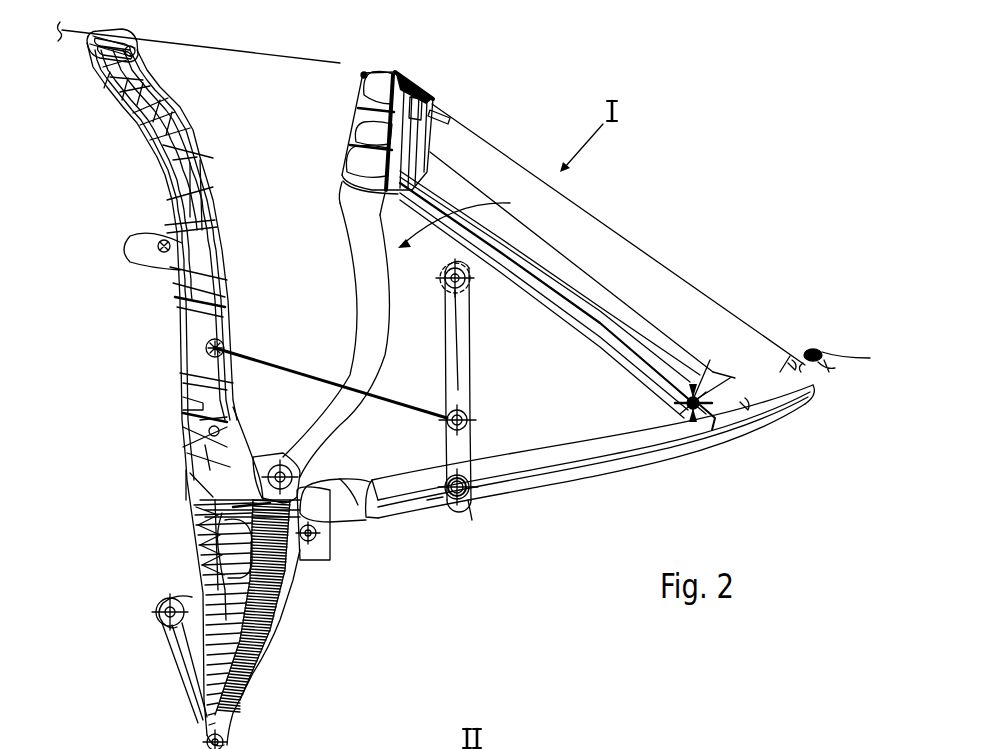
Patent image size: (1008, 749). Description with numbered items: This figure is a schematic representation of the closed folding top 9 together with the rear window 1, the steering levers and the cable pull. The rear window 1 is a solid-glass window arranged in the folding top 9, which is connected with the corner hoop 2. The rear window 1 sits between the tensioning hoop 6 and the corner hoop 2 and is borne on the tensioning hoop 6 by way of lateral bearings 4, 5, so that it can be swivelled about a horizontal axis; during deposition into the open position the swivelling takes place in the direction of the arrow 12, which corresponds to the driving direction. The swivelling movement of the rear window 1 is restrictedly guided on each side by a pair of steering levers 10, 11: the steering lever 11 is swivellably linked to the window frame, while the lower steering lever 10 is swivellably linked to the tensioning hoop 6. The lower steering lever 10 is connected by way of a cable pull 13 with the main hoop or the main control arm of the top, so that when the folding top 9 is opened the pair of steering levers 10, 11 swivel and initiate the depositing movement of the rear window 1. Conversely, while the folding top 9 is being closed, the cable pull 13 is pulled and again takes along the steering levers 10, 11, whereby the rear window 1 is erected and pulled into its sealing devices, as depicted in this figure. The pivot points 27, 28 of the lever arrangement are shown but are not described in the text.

The rear window 1 is at (629, 262).
The corner hoop 2 is at (358, 241).
The lateral bearing 4 is at (721, 448).
The lateral bearing 5 is at (699, 426).
The tensioning hoop 6 is at (596, 478).
The folding top 9 is at (332, 60).
The lower steering lever 10 is at (445, 452).
The steering lever 11 is at (449, 320).
The arrow 12 is at (459, 282).
The cable pull 13 is at (270, 366).
The upper pivot 27 is at (470, 286).
The lower pivot 28 is at (463, 500).